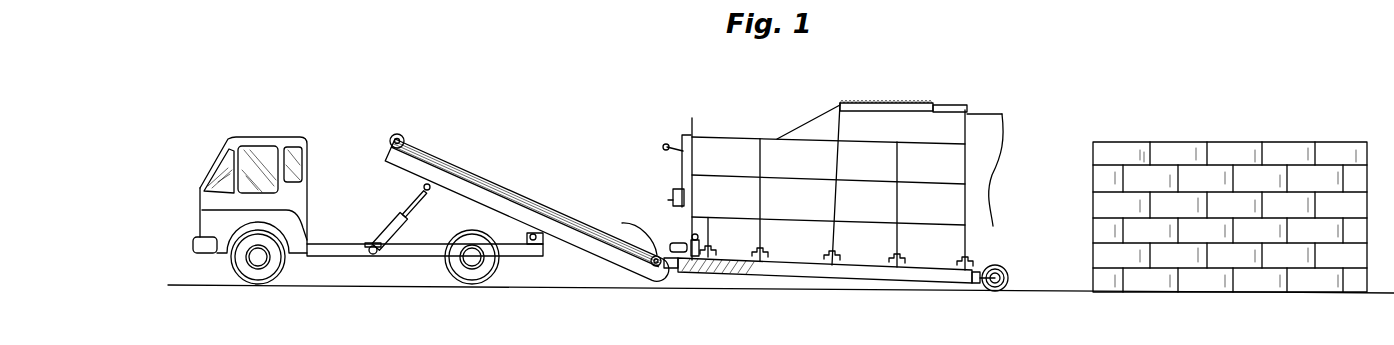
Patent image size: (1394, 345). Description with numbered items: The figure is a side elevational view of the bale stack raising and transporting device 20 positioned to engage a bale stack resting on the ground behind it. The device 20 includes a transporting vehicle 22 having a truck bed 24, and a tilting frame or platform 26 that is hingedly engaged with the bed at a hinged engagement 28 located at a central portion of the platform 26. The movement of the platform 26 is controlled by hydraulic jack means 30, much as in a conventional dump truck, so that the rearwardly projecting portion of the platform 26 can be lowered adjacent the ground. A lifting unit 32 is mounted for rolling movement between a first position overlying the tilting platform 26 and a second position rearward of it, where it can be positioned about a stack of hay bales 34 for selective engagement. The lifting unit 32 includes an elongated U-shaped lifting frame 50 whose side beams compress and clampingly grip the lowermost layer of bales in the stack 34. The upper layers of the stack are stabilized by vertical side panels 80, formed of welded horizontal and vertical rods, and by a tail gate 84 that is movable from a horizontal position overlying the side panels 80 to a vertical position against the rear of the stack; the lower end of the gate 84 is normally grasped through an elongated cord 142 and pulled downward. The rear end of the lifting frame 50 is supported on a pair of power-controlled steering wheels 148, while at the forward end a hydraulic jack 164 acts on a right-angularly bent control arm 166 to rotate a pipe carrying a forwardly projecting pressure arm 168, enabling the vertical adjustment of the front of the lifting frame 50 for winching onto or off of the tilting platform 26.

The bale stack raising and transporting device 20 is at (366, 74).
The transporting vehicle 22 is at (243, 136).
The truck bed 24 is at (349, 243).
The tilting frame or platform 26 is at (503, 175).
The hinged engagement 28 is at (543, 247).
The hydraulic jack means 30 is at (398, 214).
The lifting unit 32 is at (733, 127).
The stack of hay bales 34 is at (1277, 138).
The U-shaped lifting frame 50 is at (824, 279).
The side panel 80 is at (972, 237).
The tail gate 84 is at (989, 107).
The elongated cord 142 is at (1000, 167).
The wheels 148 is at (993, 285).
The hydraulic jack 164 is at (697, 262).
The control arm 166 is at (688, 238).
The pressure arm 168 is at (627, 225).